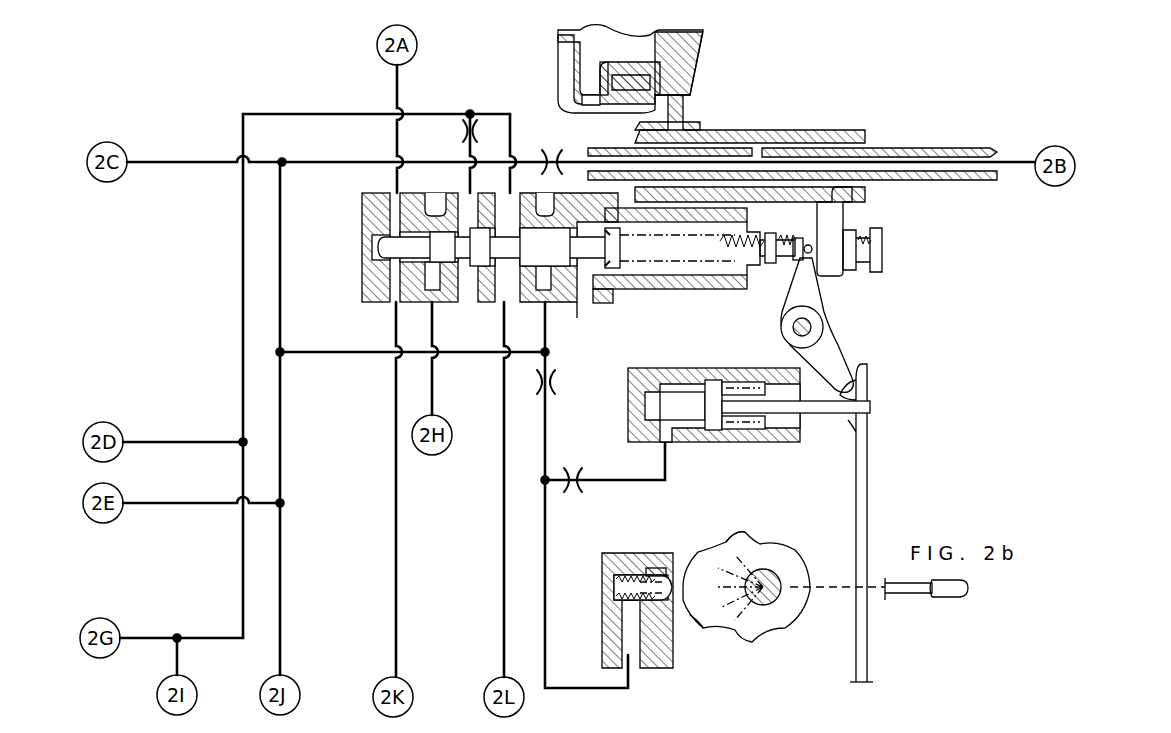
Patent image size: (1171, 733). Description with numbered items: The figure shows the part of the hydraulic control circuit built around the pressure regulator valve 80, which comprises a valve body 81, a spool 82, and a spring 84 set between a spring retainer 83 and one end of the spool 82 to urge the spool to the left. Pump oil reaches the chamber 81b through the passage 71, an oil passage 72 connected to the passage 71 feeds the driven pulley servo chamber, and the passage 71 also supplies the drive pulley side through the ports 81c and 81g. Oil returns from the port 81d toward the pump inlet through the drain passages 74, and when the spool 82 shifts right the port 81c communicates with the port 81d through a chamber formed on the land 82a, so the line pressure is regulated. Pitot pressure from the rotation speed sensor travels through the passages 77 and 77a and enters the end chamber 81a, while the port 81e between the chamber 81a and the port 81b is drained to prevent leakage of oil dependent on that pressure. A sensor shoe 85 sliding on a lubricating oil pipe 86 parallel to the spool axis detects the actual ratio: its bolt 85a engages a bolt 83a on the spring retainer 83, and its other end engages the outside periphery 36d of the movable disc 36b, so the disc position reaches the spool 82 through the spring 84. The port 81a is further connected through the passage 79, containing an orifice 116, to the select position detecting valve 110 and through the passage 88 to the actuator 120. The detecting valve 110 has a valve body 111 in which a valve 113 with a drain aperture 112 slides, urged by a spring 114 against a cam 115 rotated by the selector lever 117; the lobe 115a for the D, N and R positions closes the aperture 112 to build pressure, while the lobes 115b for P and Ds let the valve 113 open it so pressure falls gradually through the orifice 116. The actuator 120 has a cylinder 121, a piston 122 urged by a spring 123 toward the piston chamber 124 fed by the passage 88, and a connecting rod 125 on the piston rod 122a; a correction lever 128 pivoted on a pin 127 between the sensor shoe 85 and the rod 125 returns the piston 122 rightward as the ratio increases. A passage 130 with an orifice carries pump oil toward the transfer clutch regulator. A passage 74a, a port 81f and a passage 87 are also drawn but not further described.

The movable disc 36b is at (698, 70).
The outside periphery 36d is at (683, 100).
The passage 71 is at (241, 322).
The oil passage 72 is at (190, 440).
The drain passages 74 is at (312, 356).
The hydraulic line branch 74a is at (433, 385).
The passage 77 is at (398, 100).
The passage 77a is at (394, 520).
The passage 79 is at (545, 565).
The pressure regulator valve 80 is at (459, 259).
The valve body 81 is at (676, 271).
The end chamber 81a is at (362, 235).
The chamber 81b is at (462, 193).
The port 81c is at (509, 193).
The port 81d is at (546, 306).
The port 81e is at (398, 312).
The valve port 81f is at (575, 304).
The port 81g is at (506, 306).
The spool 82 is at (603, 298).
The land 82a is at (555, 262).
The spring retainer 83 is at (732, 212).
The bolt 83a is at (775, 266).
The spring 84 is at (622, 258).
The sensor shoe 85 is at (800, 130).
The bolt 85a is at (882, 252).
The lubricating oil pipe 86 is at (948, 148).
The hydraulic line 87 is at (502, 520).
The passage 88 is at (636, 480).
The select position detecting valve 110 is at (802, 557).
The valve body 111 is at (604, 656).
The drain aperture 112 is at (660, 556).
The valve 113 is at (628, 562).
The spring 114 is at (606, 598).
The cam 115 is at (784, 583).
The lobe 115a is at (694, 632).
The lobes 115b is at (730, 532).
The orifice 116 is at (552, 388).
The selector lever 117 is at (912, 596).
The actuator 120 is at (782, 418).
The cylinder 121 is at (792, 428).
The piston 122 is at (712, 384).
The rod 122a is at (865, 408).
The spring 123 is at (730, 430).
The piston chamber 124 is at (684, 385).
The connecting rod 125 is at (867, 472).
The pin 127 is at (812, 326).
The correction lever 128 is at (837, 325).
The passage 130 is at (155, 636).